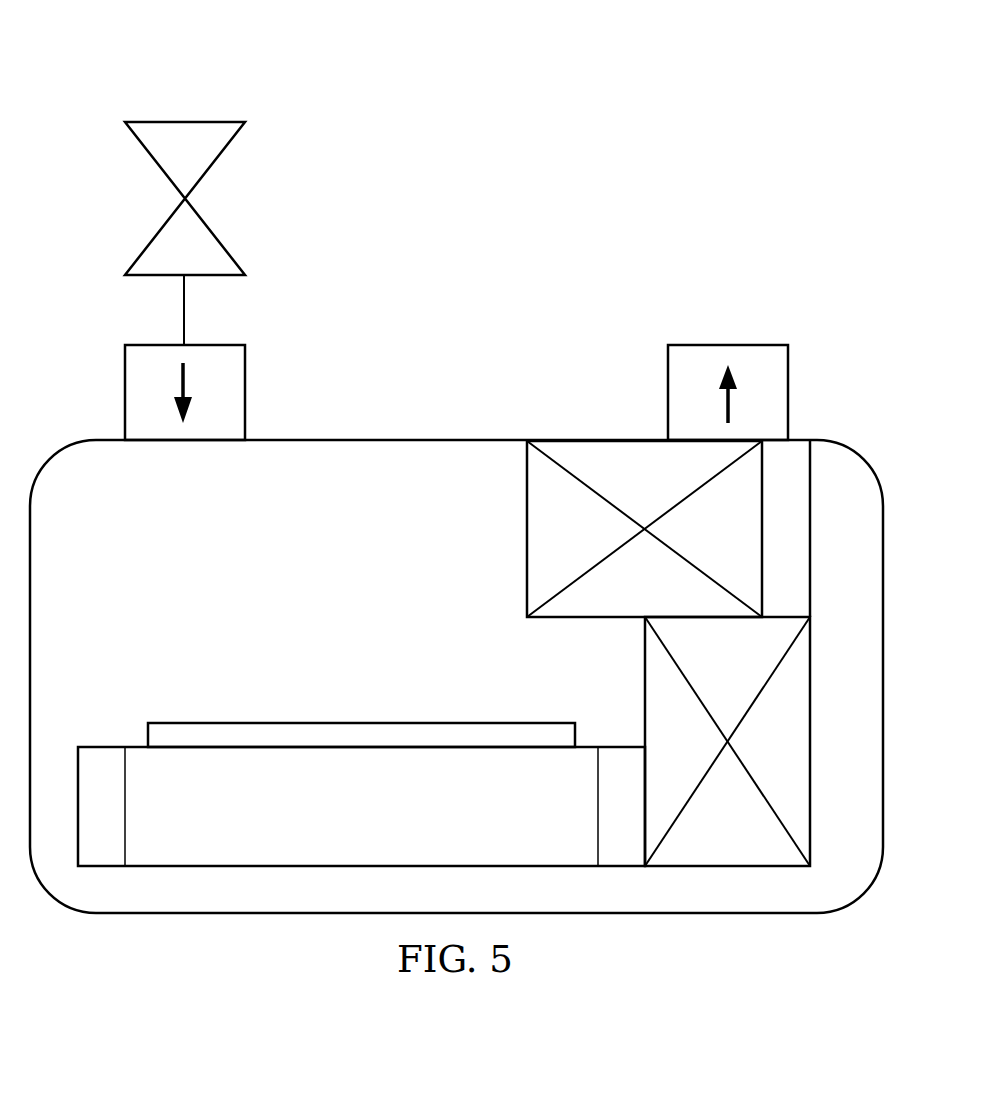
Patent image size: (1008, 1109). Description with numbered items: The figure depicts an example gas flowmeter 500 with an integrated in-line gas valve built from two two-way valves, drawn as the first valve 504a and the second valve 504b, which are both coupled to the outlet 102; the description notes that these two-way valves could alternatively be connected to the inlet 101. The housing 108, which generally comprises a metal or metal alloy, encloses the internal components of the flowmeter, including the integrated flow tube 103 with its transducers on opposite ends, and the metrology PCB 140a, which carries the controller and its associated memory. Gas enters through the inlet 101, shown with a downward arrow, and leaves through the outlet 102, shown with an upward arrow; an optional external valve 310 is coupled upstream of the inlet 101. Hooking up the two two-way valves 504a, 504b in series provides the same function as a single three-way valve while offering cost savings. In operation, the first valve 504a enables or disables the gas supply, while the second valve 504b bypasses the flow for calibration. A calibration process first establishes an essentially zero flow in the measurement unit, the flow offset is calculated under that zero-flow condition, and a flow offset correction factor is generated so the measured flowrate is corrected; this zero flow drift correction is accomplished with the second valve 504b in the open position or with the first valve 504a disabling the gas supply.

The gas flowmeter 500 is at (550, 265).
The external valve 310 is at (173, 120).
The inlet 101 is at (115, 392).
The outlet 102 is at (798, 392).
The housing 108 is at (390, 427).
The valve 2 504b is at (526, 531).
The valve 1 504a is at (643, 682).
The flow tube 103 is at (383, 840).
The metrology PCB 140a is at (362, 722).